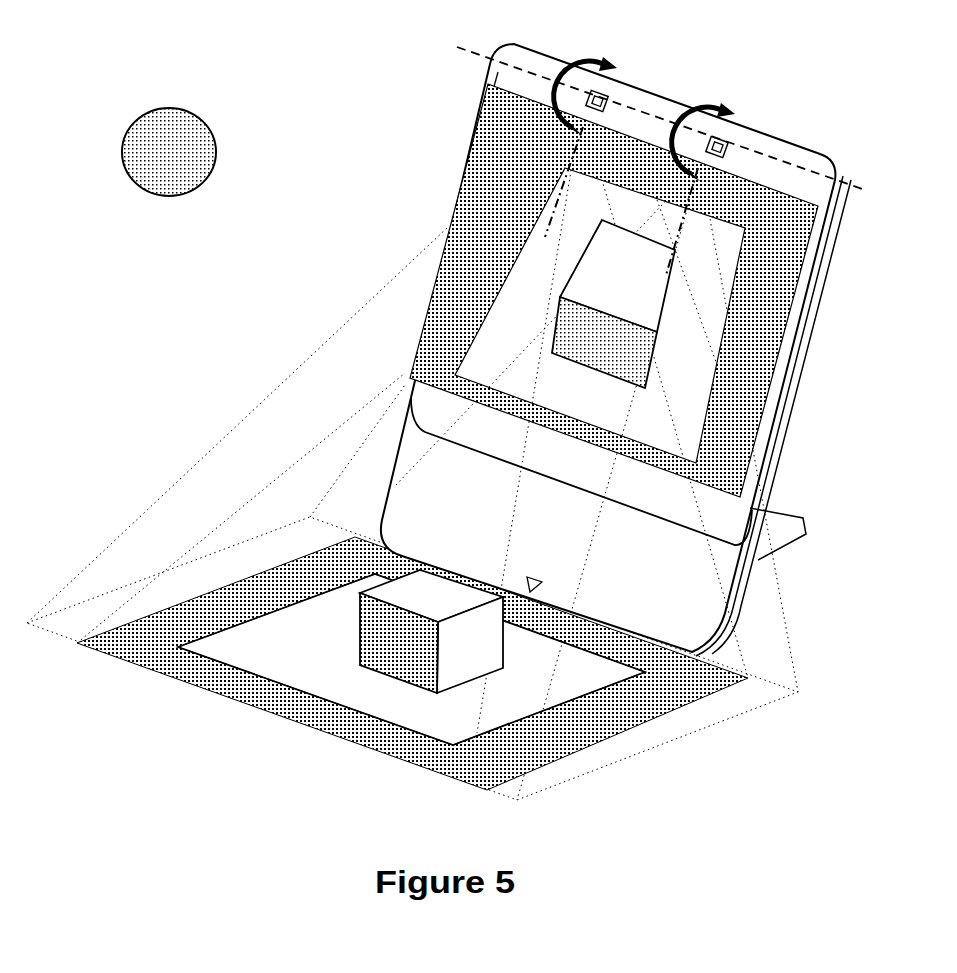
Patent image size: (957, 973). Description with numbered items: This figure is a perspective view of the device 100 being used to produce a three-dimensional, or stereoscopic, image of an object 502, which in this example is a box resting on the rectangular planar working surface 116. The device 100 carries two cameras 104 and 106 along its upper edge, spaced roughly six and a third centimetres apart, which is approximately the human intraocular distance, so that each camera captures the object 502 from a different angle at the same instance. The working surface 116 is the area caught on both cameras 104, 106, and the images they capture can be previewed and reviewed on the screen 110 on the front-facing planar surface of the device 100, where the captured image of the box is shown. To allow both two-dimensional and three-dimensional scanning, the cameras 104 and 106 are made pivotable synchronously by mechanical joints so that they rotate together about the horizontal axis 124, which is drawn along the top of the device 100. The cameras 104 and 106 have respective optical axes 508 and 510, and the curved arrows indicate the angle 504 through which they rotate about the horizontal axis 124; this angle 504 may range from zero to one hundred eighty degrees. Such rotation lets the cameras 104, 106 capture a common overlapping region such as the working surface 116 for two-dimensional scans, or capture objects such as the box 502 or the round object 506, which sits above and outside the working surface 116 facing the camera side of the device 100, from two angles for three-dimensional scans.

The device 100 is at (340, 209).
The camera 104 is at (607, 95).
The camera 106 is at (718, 136).
The screen 110 is at (767, 372).
The rectangular planar working surface 116 is at (180, 603).
The horizontal axis 124 is at (525, 75).
The object 502 is at (392, 650).
The angle 504 is at (683, 130).
The round object 506 is at (197, 117).
The optical axis 508 is at (552, 215).
The optical axis 510 is at (670, 258).